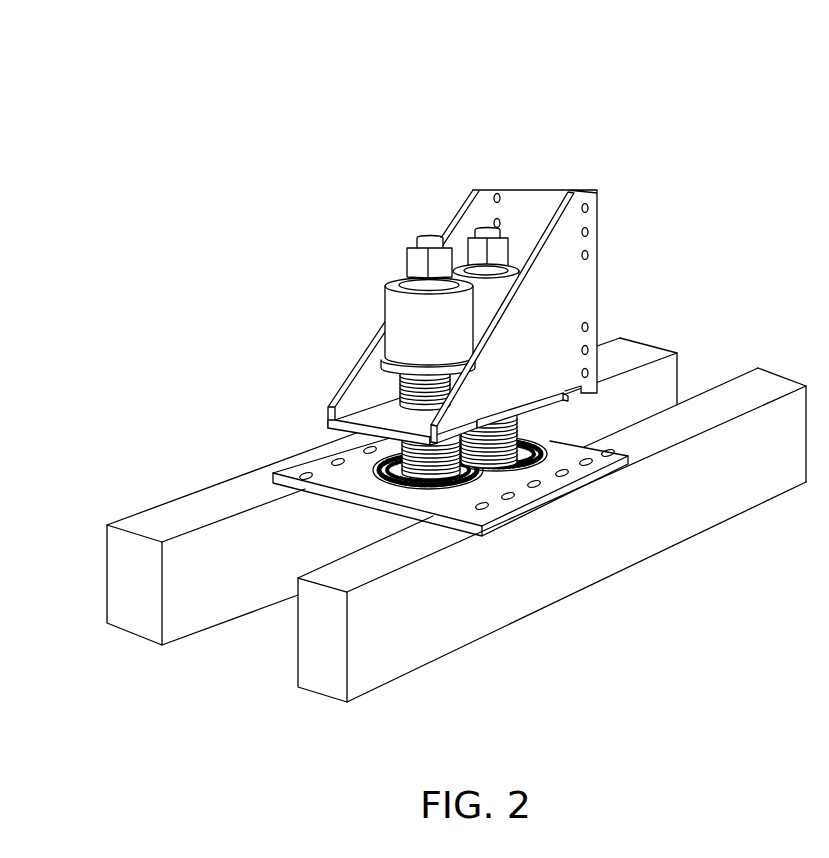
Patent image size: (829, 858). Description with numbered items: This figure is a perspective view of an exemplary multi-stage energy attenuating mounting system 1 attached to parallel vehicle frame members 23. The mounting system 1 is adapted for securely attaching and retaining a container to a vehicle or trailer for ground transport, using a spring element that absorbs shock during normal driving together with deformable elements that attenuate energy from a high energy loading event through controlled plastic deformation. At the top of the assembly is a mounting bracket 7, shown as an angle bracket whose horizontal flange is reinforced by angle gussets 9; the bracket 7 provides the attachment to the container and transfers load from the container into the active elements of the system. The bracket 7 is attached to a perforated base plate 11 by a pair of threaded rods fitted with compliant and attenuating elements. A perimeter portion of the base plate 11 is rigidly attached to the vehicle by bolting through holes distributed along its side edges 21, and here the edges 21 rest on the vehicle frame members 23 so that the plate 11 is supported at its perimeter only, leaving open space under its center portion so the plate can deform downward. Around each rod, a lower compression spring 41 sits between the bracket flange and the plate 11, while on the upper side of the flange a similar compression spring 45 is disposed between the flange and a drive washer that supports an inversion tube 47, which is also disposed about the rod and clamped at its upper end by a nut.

The multi-stage energy attenuating mounting system 1 is at (610, 67).
The mounting bracket 7 is at (497, 293).
The angle gussets 9 is at (547, 227).
The perforated base plate 11 is at (330, 492).
The side edges 21 is at (352, 456).
The vehicle frame members 23 is at (408, 658).
The lower compression spring 41 is at (530, 416).
The compression spring 45 is at (400, 389).
The inversion tube 47 is at (397, 302).